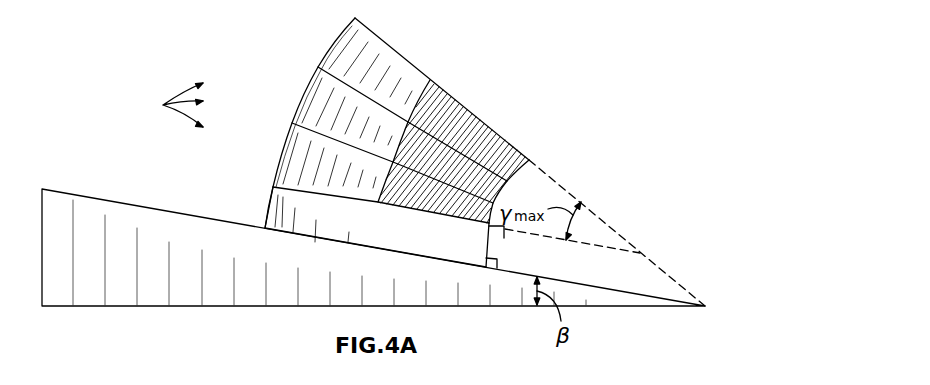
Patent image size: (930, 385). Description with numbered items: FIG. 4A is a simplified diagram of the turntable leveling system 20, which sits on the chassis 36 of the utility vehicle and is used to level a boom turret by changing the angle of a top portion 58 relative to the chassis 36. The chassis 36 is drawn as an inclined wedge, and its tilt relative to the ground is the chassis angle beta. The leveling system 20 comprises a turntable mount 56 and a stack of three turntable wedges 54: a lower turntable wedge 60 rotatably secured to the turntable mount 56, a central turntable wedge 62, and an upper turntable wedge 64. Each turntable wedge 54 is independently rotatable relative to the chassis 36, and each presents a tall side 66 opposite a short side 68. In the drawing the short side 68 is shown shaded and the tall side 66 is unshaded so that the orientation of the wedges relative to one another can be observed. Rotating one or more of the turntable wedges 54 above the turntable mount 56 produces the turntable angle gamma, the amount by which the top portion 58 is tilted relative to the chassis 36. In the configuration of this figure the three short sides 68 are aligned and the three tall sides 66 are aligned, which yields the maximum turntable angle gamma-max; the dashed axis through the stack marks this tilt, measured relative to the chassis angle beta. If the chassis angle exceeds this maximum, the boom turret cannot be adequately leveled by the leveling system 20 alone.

The turntable leveling system 20 is at (398, 143).
The chassis 36 is at (122, 212).
The turntable wedge 54 is at (169, 105).
The turntable mount 56 is at (268, 208).
The top portion 58 is at (406, 52).
The lower turntable wedge 60 is at (278, 156).
The central turntable wedge 62 is at (304, 93).
The upper turntable wedge 64 is at (336, 38).
The tall side 66 is at (199, 43).
The short side 68 is at (564, 153).